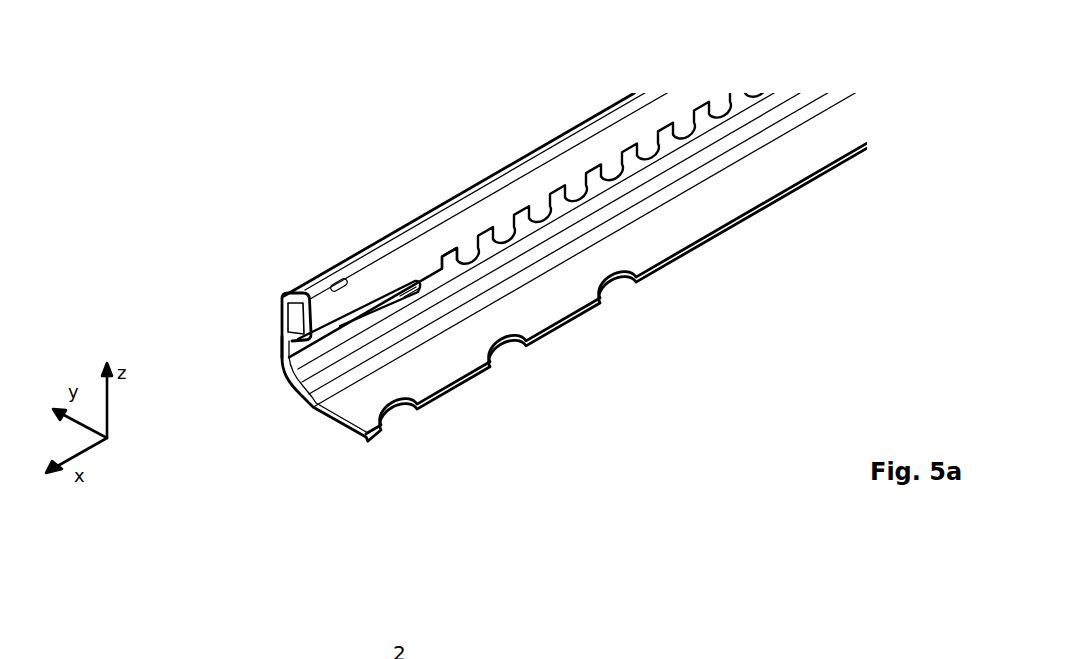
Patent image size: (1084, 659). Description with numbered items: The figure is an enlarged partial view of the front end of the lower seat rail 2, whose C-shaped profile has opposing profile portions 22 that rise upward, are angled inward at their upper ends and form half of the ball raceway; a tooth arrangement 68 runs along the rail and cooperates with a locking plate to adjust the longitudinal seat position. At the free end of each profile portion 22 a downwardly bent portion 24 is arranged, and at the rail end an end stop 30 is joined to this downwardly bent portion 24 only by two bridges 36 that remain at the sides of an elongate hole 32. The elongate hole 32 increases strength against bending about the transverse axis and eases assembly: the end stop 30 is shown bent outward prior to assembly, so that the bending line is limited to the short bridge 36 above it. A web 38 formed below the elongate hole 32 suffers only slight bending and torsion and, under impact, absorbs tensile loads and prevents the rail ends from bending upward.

The lower seat rail 2 is at (440, 78).
The profile portion 22 is at (308, 332).
The downwardly bent portion 24 is at (313, 318).
The end stop 30 is at (312, 333).
The elongate hole 32 is at (391, 296).
The bridge 36 is at (348, 274).
The web 38 is at (375, 310).
The tooth arrangement 68 is at (613, 176).